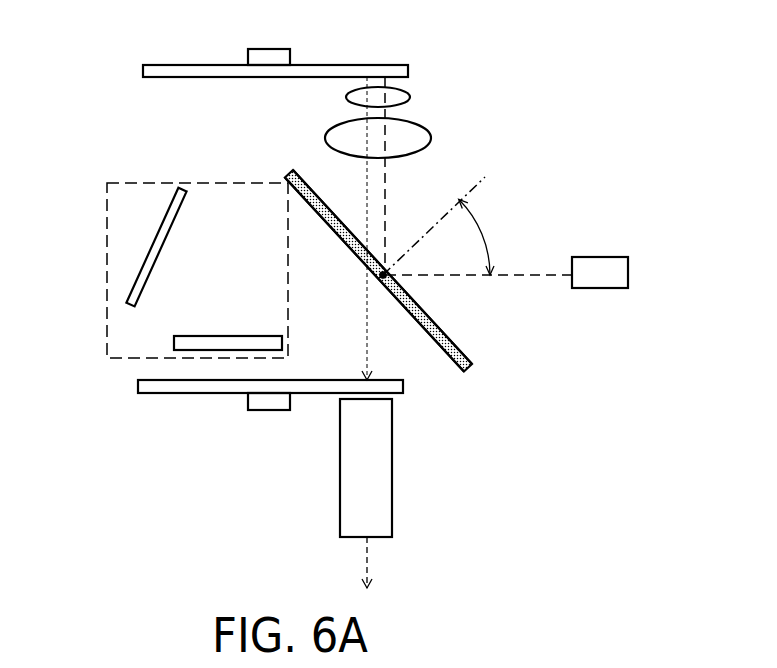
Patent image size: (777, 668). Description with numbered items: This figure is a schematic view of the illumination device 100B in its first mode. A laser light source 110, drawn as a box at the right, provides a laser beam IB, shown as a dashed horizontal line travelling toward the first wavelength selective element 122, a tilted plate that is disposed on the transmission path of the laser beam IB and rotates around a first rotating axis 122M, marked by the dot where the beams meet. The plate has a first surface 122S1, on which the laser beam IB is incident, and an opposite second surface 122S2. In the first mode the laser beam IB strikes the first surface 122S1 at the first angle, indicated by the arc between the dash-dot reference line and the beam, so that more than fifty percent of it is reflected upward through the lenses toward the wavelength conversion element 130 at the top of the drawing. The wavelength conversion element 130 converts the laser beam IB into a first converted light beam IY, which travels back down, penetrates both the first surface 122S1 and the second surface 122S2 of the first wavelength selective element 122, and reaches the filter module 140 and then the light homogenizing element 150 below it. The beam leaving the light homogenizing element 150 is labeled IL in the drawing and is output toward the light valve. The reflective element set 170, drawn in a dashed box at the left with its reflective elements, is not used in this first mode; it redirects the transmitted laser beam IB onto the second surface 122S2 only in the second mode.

The illumination device 100B is at (707, 587).
The laser light source 110 is at (628, 272).
The first wavelength selective element 122 is at (466, 305).
The first rotating axis 122M is at (398, 289).
The first surface 122S1 is at (452, 342).
The second surface 122S2 is at (447, 353).
The wavelength conversion element 130 is at (197, 65).
The filter module 140 is at (187, 393).
The light homogenizing element 150 is at (392, 467).
The reflective element set 170 is at (105, 271).
The laser beam IB is at (537, 270).
The first converted light beam IY is at (365, 200).
The transmitted beam IL is at (368, 560).